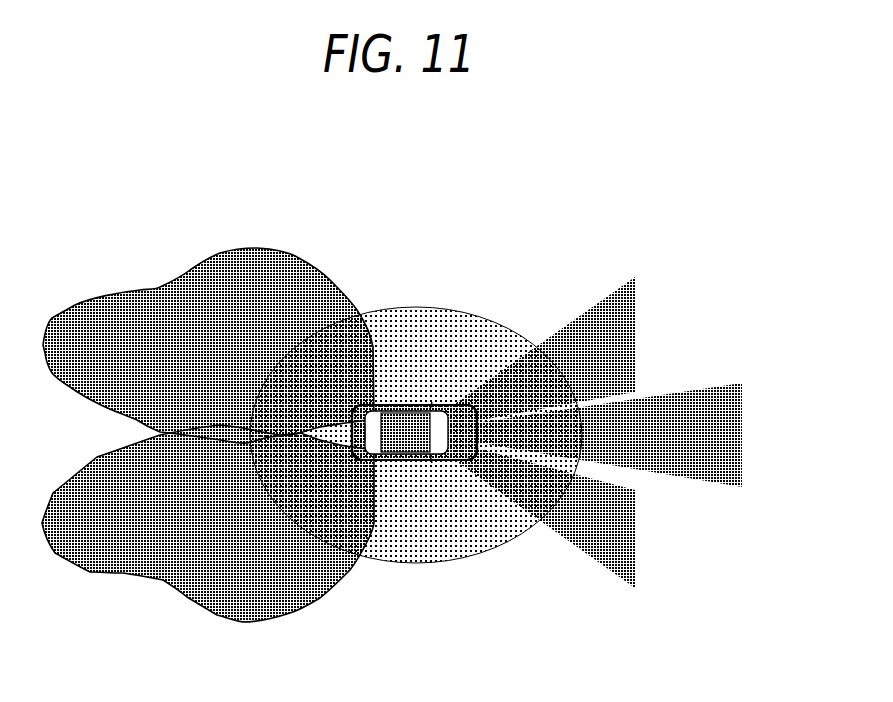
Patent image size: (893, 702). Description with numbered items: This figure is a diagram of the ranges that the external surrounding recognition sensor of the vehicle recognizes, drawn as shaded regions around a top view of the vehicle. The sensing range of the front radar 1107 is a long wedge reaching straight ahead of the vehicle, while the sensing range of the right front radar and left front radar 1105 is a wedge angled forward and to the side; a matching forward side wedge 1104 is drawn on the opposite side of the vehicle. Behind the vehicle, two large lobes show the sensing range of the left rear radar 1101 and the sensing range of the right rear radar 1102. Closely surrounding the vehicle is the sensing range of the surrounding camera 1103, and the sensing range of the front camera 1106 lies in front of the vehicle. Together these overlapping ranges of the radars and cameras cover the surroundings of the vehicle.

The sensing range of the left rear radar 1101 is at (244, 250).
The sensing range of the right rear radar 1102 is at (123, 573).
The sensing range of the surrounding camera 1103 is at (393, 317).
The sensing range of a front side radar 1104 is at (608, 570).
The sensing range of the right front radar and left front radar 1105 is at (583, 318).
The sensing range of the front camera 1106 is at (512, 448).
The sensing range of the front radar 1107 is at (668, 407).